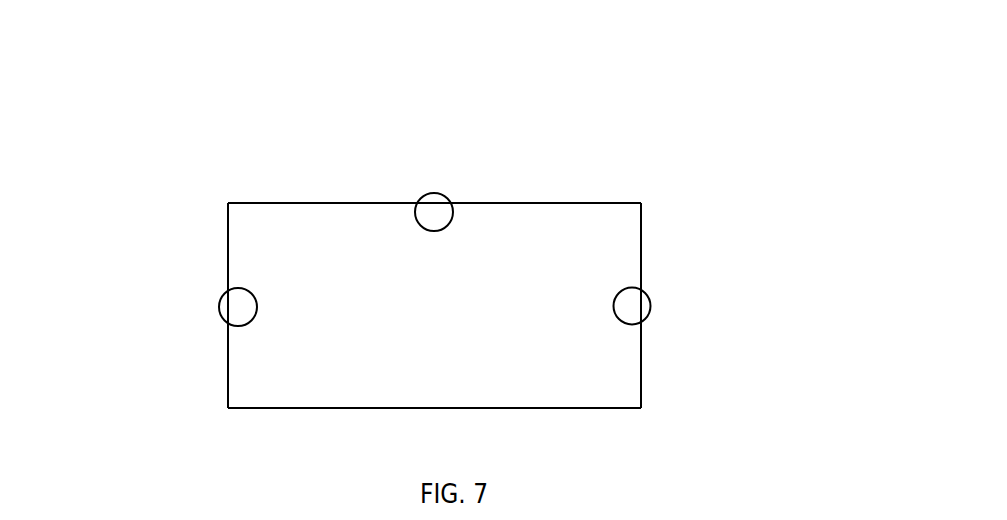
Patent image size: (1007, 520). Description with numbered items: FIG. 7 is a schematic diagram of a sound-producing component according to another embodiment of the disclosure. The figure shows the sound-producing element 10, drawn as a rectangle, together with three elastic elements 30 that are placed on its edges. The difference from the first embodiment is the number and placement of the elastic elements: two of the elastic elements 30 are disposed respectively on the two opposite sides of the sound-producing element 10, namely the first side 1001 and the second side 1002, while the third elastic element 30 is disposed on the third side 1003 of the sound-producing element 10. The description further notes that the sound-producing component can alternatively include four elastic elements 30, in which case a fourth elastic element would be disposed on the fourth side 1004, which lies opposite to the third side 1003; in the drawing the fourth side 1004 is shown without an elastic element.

The sound-producing element 10 is at (436, 254).
The elastic element 30 is at (454, 253).
The first side 1001 is at (178, 305).
The second side 1002 is at (688, 305).
The third side 1003 is at (434, 172).
The fourth side 1004 is at (434, 440).